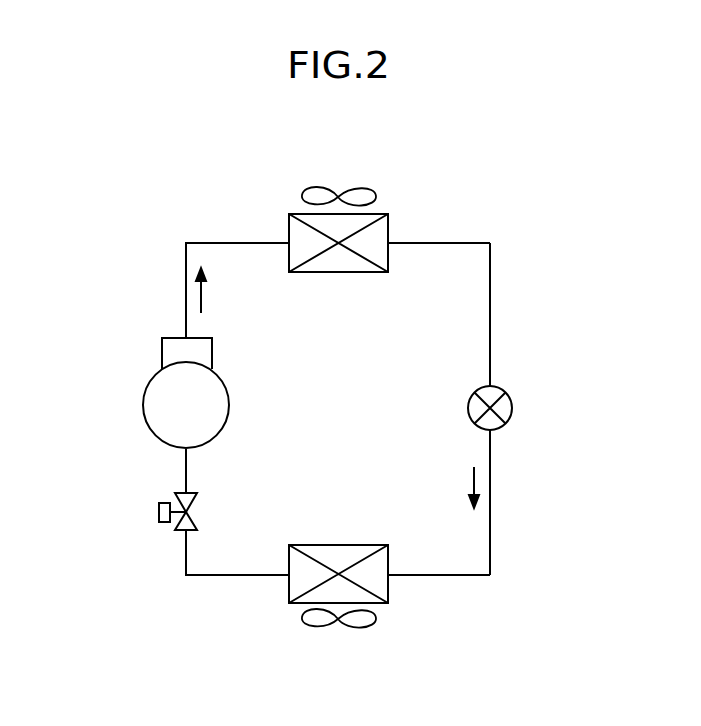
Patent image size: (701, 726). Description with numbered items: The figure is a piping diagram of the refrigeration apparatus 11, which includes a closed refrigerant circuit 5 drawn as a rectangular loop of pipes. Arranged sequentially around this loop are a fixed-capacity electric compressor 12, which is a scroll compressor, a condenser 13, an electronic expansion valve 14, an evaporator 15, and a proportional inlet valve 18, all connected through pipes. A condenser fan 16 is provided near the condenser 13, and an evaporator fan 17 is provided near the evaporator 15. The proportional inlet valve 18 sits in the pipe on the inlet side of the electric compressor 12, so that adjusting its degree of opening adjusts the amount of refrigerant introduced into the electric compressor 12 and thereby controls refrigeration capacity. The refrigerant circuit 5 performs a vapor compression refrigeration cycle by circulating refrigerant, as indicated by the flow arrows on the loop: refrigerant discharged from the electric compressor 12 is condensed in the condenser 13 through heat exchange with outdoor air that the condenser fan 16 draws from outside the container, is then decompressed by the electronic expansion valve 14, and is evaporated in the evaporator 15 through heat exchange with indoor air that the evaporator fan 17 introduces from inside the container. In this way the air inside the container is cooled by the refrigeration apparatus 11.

The refrigerant circuit 5 is at (492, 293).
The refrigeration apparatus 11 is at (357, 363).
The electric compressor 12 is at (143, 400).
The condenser 13 is at (343, 275).
The electronic expansion valve 14 is at (512, 402).
The evaporator 15 is at (340, 543).
The condenser fan 16 is at (352, 187).
The evaporator fan 17 is at (348, 630).
The proportional inlet valve 18 is at (157, 512).